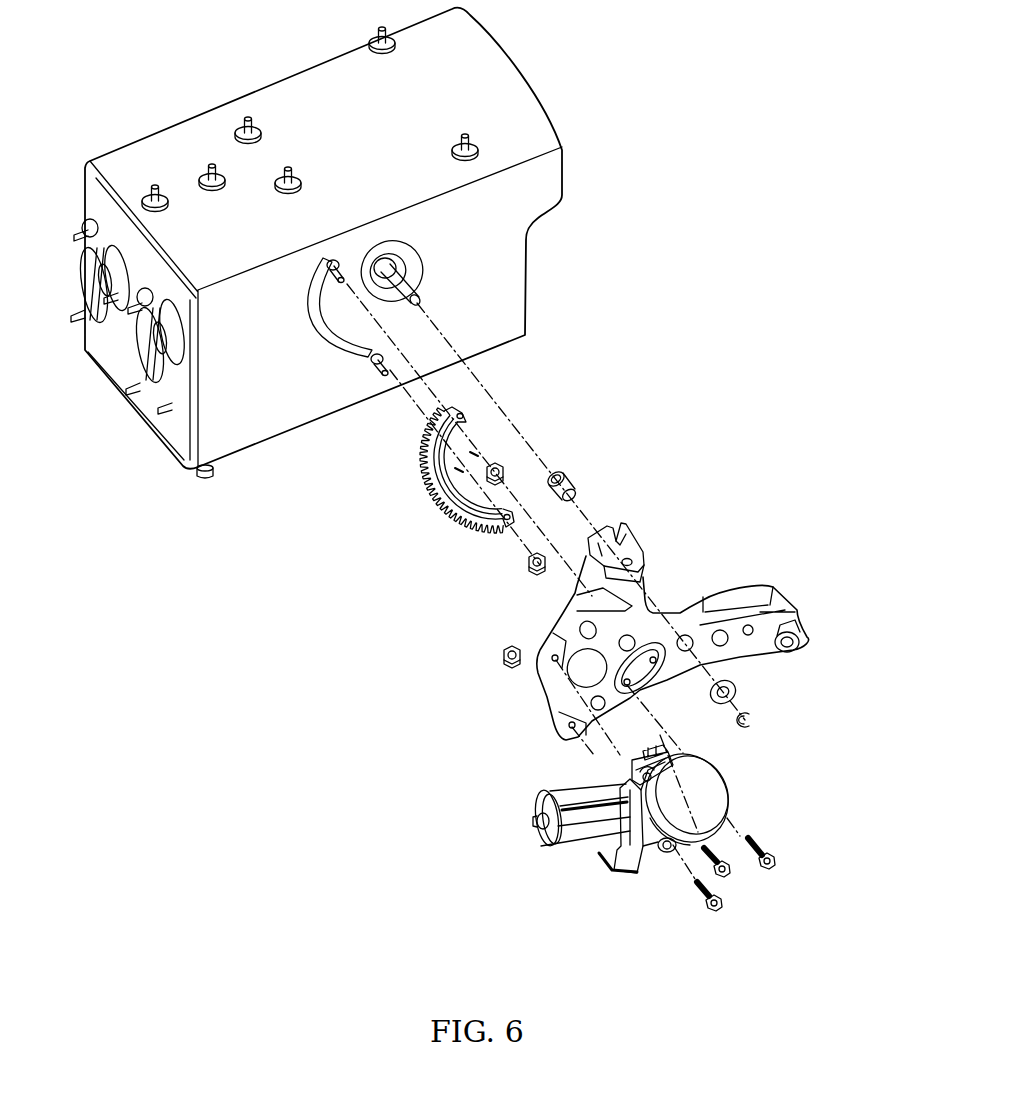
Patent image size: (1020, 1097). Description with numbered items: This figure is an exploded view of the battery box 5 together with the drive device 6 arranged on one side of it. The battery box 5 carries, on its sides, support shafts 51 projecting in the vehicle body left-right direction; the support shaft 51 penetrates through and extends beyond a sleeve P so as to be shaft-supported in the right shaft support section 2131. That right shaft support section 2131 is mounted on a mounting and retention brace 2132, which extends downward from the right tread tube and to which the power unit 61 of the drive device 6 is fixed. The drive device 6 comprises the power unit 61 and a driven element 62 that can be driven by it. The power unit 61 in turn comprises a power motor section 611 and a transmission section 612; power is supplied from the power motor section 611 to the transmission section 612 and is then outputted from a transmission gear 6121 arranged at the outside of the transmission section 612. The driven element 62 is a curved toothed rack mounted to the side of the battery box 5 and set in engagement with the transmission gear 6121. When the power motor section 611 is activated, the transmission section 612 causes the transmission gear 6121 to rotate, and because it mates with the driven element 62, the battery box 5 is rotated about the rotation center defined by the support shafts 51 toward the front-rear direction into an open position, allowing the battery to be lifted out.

The battery box 5 is at (508, 78).
The support shaft 51 is at (412, 286).
The driven element 62 is at (427, 478).
The sleeve P is at (578, 488).
The right shaft support section 2131 is at (545, 613).
The mounting and retention brace 2132 is at (720, 598).
The drive device 6 is at (488, 832).
The power unit 61 is at (639, 855).
The power motor section 611 is at (583, 840).
The transmission section 612 is at (639, 797).
The transmission gear 6121 is at (634, 750).